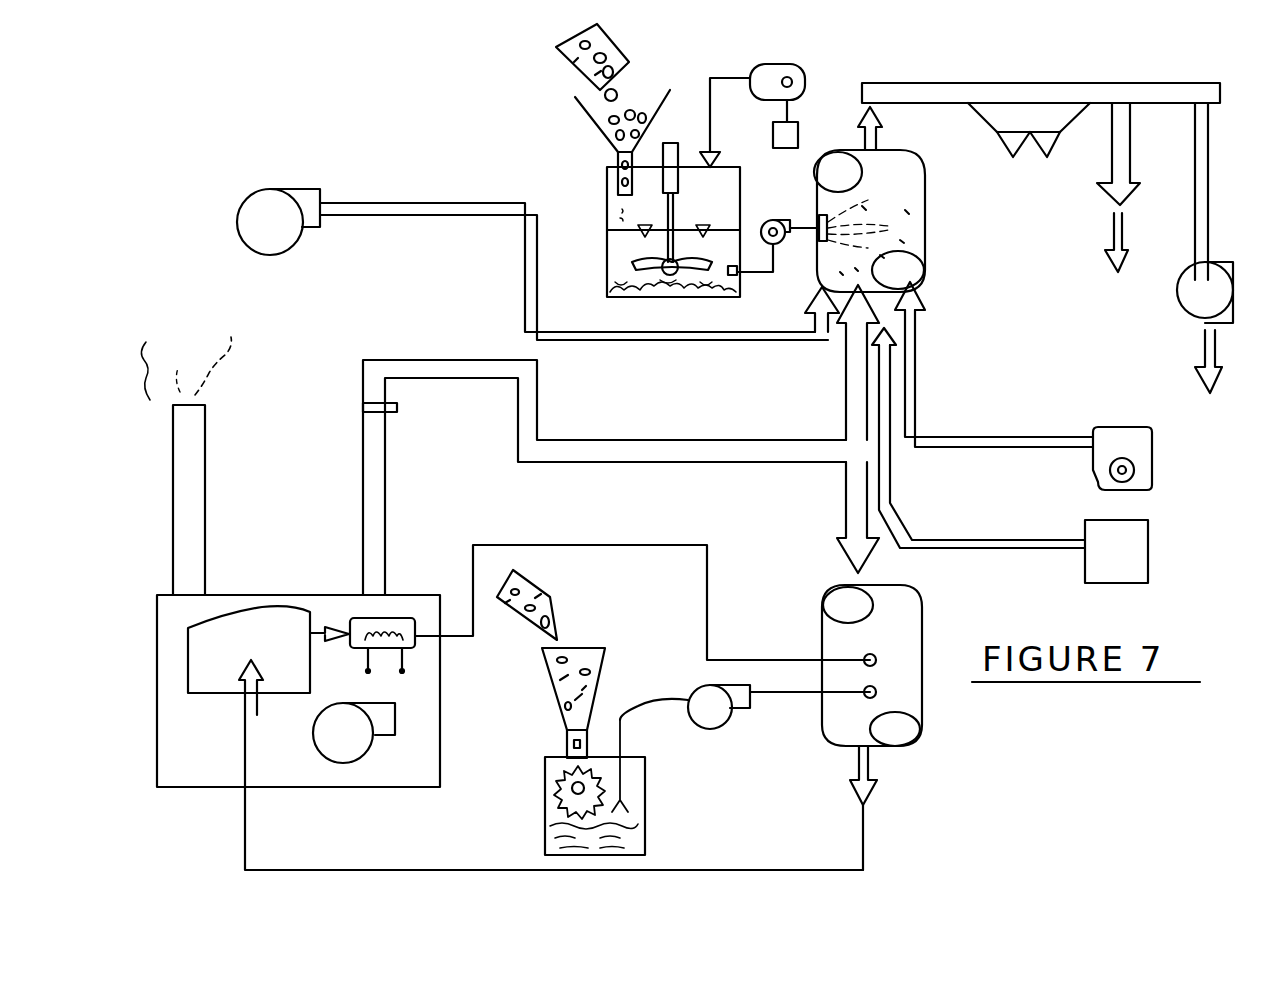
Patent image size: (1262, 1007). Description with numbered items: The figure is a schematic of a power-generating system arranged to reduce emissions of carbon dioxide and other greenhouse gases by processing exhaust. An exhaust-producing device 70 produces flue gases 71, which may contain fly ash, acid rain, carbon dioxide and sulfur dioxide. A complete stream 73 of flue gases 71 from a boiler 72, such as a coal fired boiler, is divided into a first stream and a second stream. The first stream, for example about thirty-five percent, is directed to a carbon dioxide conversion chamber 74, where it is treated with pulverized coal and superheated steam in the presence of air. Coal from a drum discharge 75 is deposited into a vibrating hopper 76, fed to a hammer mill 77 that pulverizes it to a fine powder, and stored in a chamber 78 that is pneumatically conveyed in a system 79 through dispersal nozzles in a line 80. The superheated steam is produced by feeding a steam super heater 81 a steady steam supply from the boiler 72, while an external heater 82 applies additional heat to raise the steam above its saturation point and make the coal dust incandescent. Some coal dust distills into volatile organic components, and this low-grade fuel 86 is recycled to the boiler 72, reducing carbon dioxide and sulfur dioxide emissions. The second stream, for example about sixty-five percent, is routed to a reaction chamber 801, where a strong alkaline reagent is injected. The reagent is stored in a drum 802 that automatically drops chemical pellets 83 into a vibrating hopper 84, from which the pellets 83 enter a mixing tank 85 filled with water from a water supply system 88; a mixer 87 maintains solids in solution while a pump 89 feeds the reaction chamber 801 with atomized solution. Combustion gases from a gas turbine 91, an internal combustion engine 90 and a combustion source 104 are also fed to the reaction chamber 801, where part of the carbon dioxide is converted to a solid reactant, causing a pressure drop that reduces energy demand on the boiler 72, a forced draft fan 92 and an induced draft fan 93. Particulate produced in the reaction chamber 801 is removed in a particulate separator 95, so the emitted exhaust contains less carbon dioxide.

The exhaust-producing device 70 is at (157, 732).
The flue gases 71 is at (207, 352).
The boiler 72 is at (270, 656).
The complete stream 73 is at (478, 380).
The carbon dioxide conversion chamber 74 is at (922, 628).
The drum discharge 75 is at (520, 582).
The vibrating hopper 76 is at (596, 650).
The hammer mill 77 is at (548, 794).
The chamber 78 is at (640, 846).
The system 79 is at (705, 730).
The line 80 is at (812, 692).
The steam super heater 81 is at (360, 617).
The external heater 82 is at (385, 674).
The chemical pellets 83 is at (617, 92).
The vibrating hopper 84 is at (648, 132).
The mixing tank 85 is at (608, 222).
The low-grade fuel 86 is at (870, 772).
The mixer 87 is at (678, 185).
The water supply system 88 is at (805, 72).
The pump 89 is at (760, 218).
The internal combustion engine 90 is at (1093, 478).
The gas turbine 91 is at (285, 190).
The forced draft fan 92 is at (358, 752).
The induced draft fan 93 is at (1180, 308).
The particulate separator 95 is at (1040, 121).
The combustion source 104 is at (1126, 571).
The reaction chamber 801 is at (925, 232).
The drum 802 is at (612, 50).